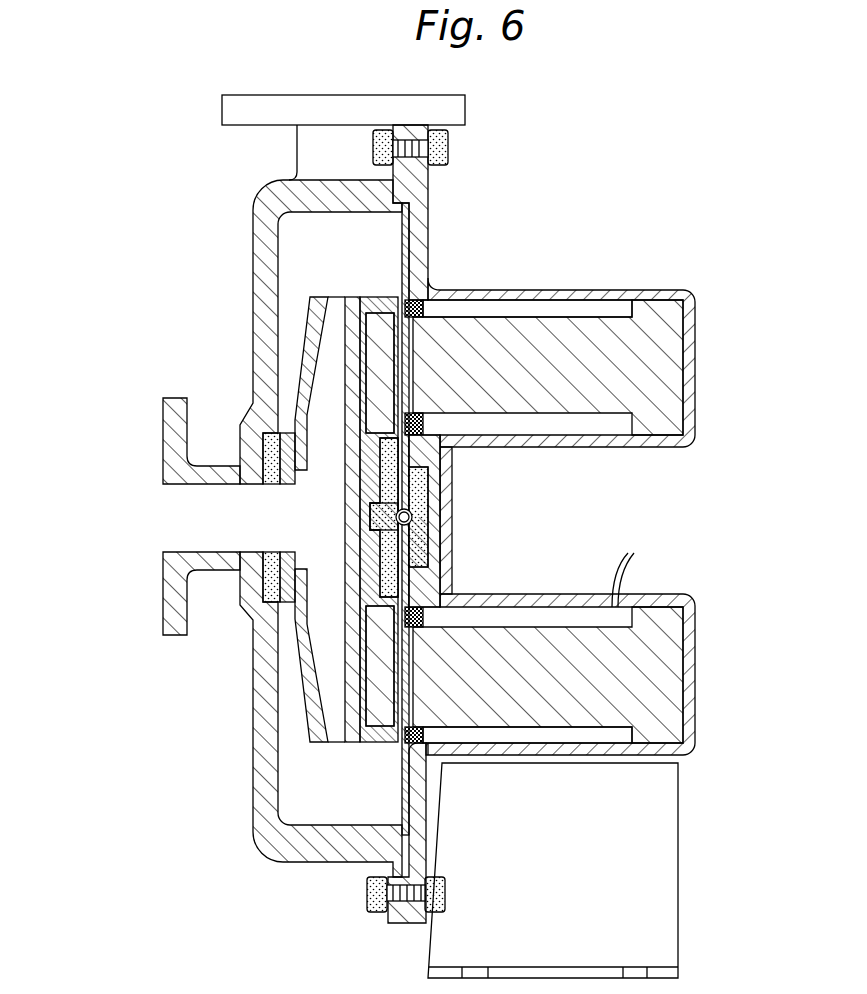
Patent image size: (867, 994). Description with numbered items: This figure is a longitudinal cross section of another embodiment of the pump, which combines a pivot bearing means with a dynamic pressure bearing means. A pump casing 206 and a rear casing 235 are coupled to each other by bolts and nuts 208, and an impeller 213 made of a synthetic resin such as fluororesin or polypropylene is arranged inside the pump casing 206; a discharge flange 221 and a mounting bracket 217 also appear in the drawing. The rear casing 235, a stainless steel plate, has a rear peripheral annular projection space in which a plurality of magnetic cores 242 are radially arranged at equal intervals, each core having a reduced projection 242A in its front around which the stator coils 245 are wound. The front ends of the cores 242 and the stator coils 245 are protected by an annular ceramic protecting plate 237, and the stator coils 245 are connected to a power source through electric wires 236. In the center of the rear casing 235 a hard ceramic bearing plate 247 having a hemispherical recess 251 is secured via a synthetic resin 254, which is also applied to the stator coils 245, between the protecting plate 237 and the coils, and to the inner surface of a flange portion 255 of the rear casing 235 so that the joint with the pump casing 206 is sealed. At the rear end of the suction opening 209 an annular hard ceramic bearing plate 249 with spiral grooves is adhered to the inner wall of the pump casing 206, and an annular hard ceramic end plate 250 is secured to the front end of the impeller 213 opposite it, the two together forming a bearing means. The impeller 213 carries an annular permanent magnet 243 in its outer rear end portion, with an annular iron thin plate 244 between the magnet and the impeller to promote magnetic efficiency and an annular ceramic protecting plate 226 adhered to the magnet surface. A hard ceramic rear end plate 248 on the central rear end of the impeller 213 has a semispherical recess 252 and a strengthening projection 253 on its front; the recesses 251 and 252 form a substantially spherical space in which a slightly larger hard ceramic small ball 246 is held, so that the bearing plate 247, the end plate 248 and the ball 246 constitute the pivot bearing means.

The pump casing 206 is at (253, 248).
The bolts and nuts 208 is at (448, 147).
The suction opening 209 is at (180, 490).
The impeller 213 is at (308, 742).
The mounting bracket 217 is at (680, 866).
The discharge flange 221 is at (328, 95).
The annular ceramic protecting plate 226 is at (416, 279).
The rear casing 235 is at (676, 292).
The electric wires 236 is at (632, 568).
The annular ceramic protecting plate 237 is at (398, 703).
The magnetic cores 242 is at (683, 360).
The reduced projection 242A is at (588, 328).
The annular permanent magnet 243 is at (355, 742).
The annular iron thin plate 244 is at (387, 748).
The stator coils 245 is at (442, 758).
The hard ceramic small ball 246 is at (412, 517).
The hard ceramic bearing plate 247 is at (425, 485).
The hard ceramic rear end plate 248 is at (400, 596).
The annular hard ceramic bearing plate 249 is at (265, 607).
The annular hard ceramic end plate 250 is at (282, 646).
The hemispherical recess 251 is at (425, 541).
The semispherical recess 252 is at (372, 508).
The projection 253 is at (372, 537).
The synthetic resin 254 is at (453, 456).
The flange portion 255 is at (430, 212).